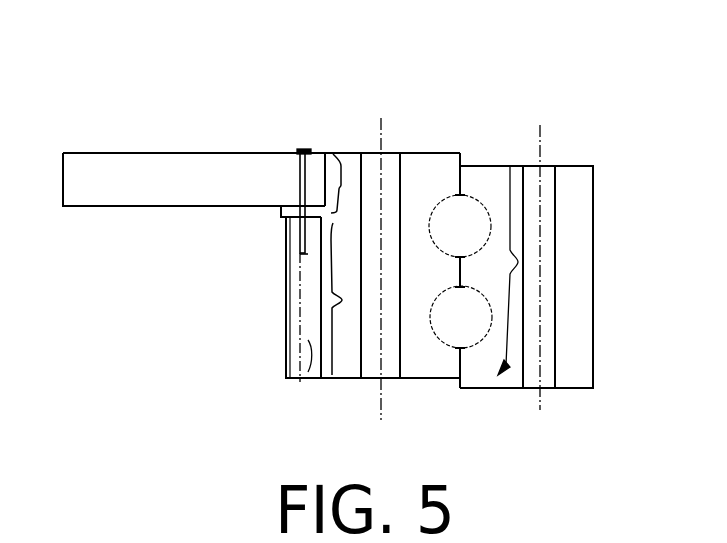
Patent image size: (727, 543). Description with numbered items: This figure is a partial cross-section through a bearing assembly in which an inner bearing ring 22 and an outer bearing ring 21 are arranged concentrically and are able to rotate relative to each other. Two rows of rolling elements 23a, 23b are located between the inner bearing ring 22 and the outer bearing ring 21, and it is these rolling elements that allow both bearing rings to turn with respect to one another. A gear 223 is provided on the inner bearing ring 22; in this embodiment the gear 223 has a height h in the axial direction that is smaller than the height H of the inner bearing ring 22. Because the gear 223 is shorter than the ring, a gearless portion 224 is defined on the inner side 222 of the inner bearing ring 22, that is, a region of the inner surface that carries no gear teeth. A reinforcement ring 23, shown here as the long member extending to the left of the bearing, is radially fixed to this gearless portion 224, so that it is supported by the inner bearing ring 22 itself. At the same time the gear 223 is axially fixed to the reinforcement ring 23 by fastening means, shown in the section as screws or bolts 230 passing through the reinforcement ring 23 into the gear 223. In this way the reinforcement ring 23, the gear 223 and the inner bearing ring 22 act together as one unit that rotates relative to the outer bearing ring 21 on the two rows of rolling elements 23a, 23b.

The outer bearing ring 21 is at (577, 263).
The inner bearing ring 22 is at (423, 180).
The reinforcement ring 23 is at (148, 190).
The row of rolling elements 23a is at (468, 220).
The row of rolling elements 23b is at (472, 327).
The inner side of the inner bearing ring 222 is at (295, 211).
The gear 223 is at (300, 380).
The gearless portion 224 is at (350, 178).
The screws or bolts 230 is at (300, 150).